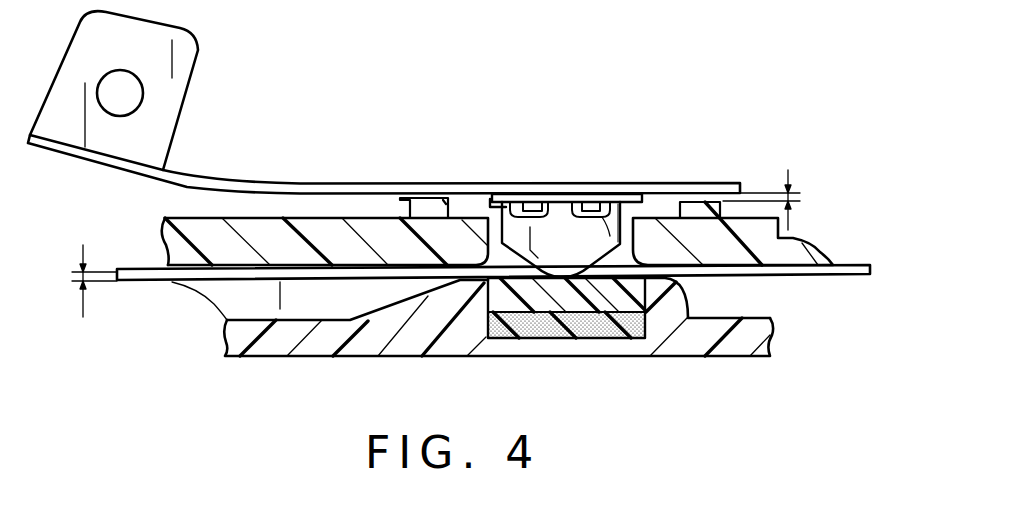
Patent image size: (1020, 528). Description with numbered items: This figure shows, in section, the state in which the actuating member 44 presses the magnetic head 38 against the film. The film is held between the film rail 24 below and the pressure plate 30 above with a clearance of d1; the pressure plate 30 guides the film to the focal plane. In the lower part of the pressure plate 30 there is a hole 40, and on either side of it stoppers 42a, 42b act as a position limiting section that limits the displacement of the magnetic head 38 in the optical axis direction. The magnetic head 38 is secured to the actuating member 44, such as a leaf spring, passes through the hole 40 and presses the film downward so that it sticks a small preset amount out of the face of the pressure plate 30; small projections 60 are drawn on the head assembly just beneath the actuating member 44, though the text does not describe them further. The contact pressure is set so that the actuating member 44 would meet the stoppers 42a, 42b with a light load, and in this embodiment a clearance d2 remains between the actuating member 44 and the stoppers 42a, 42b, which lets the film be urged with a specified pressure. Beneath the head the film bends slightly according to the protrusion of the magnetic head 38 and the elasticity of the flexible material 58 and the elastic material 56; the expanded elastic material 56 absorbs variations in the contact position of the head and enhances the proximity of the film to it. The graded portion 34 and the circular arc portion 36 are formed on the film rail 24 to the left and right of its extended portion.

The film rail 24 is at (217, 298).
The pressure plate 30 is at (182, 256).
The graded portion 34 is at (430, 315).
The circular arc portion 36 is at (690, 290).
The magnetic head 38 is at (619, 203).
The hole 40 is at (497, 230).
The stopper 42a is at (698, 210).
The stopper 42b is at (428, 212).
The actuating member 44 is at (353, 182).
The elastic material 56 is at (548, 338).
The flexible material 58 is at (590, 300).
The contact projections 60 is at (595, 202).
The clearance d1 is at (77, 281).
The clearance d2 is at (775, 200).